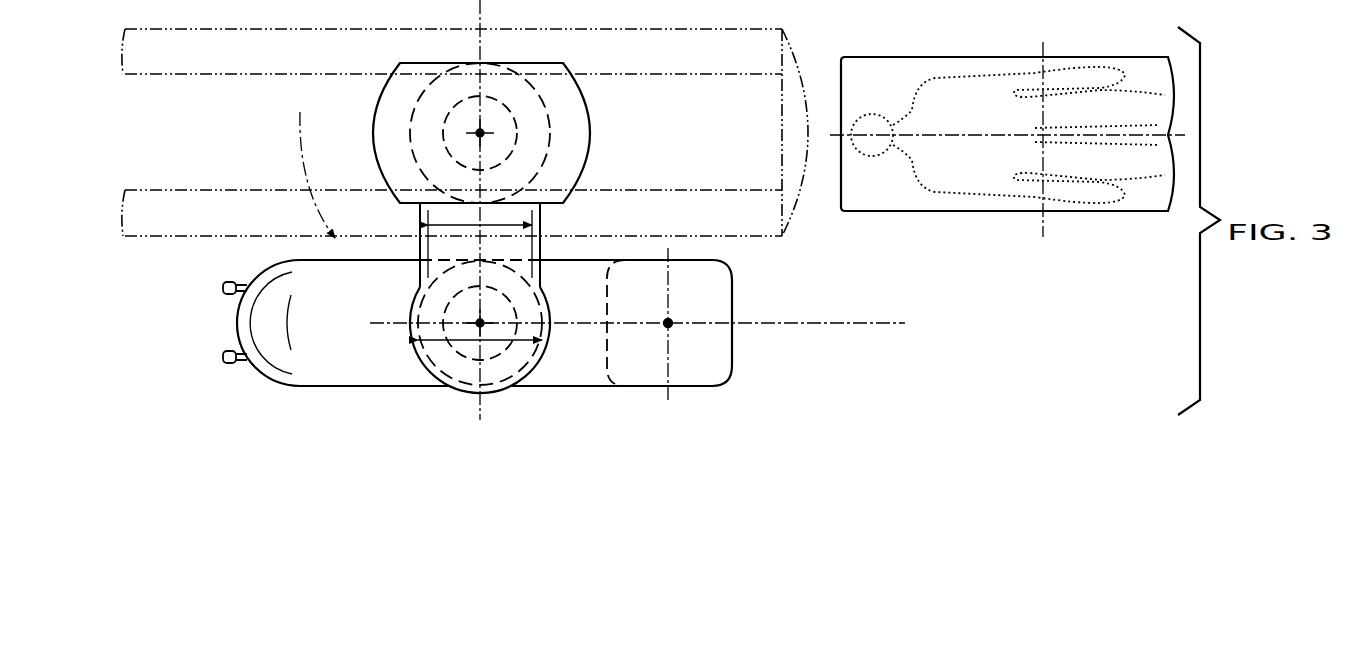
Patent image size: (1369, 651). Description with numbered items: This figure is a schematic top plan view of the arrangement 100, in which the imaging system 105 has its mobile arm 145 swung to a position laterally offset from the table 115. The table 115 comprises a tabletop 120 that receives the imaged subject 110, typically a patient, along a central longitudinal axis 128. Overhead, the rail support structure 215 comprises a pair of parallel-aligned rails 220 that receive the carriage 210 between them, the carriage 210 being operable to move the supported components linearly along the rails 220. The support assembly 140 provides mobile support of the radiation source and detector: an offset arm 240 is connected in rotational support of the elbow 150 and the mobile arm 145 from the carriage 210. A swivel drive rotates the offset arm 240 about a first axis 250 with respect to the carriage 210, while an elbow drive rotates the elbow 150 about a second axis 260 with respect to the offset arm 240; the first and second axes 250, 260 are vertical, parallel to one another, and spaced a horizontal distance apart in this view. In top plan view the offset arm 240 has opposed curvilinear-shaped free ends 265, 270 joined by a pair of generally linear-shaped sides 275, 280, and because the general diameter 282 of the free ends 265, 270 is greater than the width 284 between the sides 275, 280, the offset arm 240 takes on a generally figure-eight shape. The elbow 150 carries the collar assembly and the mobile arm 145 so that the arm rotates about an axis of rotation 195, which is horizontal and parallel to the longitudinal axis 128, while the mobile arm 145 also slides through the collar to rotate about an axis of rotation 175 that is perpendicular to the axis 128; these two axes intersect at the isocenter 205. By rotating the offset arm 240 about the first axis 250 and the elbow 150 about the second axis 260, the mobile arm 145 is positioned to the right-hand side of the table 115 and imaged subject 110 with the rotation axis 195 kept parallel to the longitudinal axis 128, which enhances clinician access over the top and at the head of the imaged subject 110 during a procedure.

The arrangement 100 is at (843, 398).
The imaging system 105 is at (311, 25).
The imaged subject 110 is at (972, 197).
The table 115 is at (1103, 42).
The tabletop 120 is at (963, 57).
The central longitudinal axis 128 is at (953, 137).
The support assembly 140 is at (220, 259).
The mobile arm 145 is at (553, 391).
The elbow 150 is at (394, 390).
The axis of rotation 175 is at (668, 288).
The axis of rotation 195 is at (857, 326).
The isocenter 205 is at (676, 331).
The carriage 210 is at (590, 132).
The rail support structure 215 is at (802, 25).
The rails 220 is at (683, 30).
The offset arm 240 is at (418, 250).
The first axis 250 is at (492, 120).
The second axis 260 is at (471, 316).
The curvilinear-shaped free end 265 is at (553, 98).
The curvilinear-shaped free end 270 is at (465, 395).
The linear-shaped side 275 is at (416, 215).
The linear-shaped side 280 is at (546, 211).
The diameter 282 is at (418, 342).
The width 284 is at (460, 225).